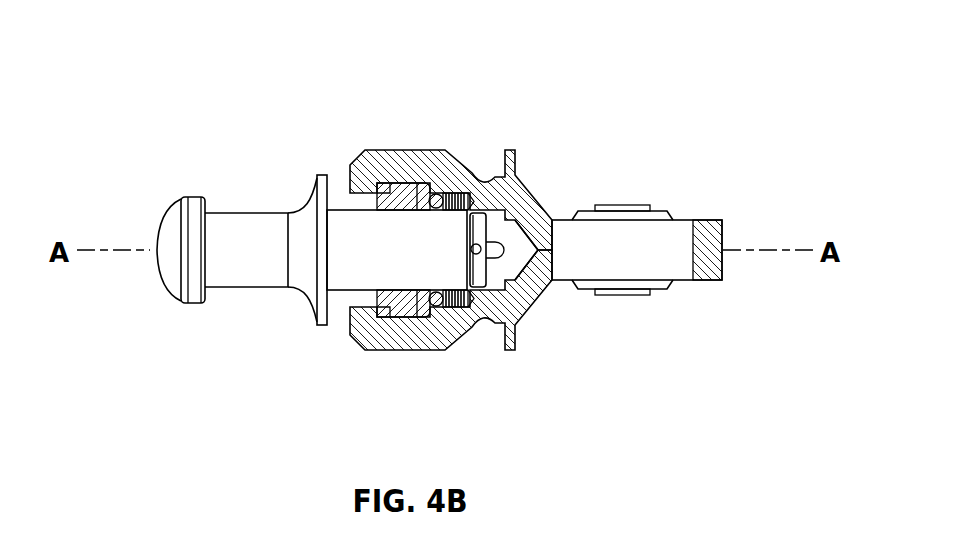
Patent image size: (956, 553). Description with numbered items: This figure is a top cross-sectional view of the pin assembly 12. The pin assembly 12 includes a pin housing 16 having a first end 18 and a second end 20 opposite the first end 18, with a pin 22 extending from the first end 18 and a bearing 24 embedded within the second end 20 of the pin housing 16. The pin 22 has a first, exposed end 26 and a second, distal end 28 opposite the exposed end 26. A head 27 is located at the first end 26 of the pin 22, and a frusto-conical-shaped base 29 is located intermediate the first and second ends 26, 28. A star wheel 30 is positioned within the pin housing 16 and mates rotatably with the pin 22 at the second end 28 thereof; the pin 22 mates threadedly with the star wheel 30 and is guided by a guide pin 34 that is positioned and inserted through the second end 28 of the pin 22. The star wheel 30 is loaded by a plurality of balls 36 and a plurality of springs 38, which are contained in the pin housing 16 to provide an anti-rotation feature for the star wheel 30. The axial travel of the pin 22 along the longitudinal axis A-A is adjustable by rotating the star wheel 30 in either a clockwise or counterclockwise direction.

The pin assembly 12 is at (139, 68).
The pin housing 16 is at (363, 330).
The first end 18 is at (347, 330).
The second end 20 is at (724, 267).
The pin 22 is at (247, 272).
The bearing 24 is at (633, 297).
The first, exposed end 26 is at (157, 237).
The head 27 is at (195, 207).
The second, distal end 28 is at (487, 261).
The frusto-conical-shaped base 29 is at (311, 212).
The star wheel 30 is at (383, 188).
The guide pin 34 is at (476, 241).
The balls 36 is at (437, 306).
The springs 38 is at (473, 290).